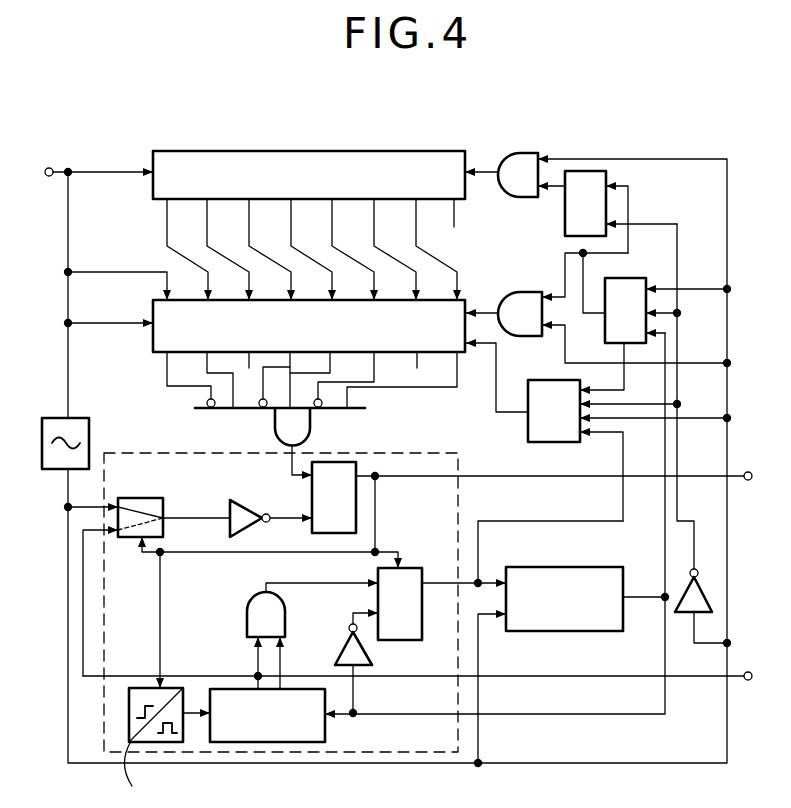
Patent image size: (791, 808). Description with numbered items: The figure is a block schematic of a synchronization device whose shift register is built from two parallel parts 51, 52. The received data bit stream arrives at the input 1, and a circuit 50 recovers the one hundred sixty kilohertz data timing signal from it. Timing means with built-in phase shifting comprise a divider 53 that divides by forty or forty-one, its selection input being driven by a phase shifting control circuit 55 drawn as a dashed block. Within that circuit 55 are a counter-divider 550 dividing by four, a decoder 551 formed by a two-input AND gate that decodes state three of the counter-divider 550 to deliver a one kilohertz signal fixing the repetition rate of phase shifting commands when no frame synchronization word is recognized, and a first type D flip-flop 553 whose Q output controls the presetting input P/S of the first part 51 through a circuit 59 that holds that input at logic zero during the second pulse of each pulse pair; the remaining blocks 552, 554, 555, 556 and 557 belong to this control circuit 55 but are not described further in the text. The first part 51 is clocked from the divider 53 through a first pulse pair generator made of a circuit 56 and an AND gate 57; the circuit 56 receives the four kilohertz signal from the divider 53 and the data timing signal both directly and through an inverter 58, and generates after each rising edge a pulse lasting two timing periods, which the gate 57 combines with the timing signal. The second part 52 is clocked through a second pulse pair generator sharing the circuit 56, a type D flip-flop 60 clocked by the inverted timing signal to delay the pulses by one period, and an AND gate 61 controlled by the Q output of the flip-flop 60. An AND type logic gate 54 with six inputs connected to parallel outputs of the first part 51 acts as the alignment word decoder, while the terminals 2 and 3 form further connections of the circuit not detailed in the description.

The input 1 is at (50, 167).
The output terminal 2 is at (748, 471).
The output terminal 3 is at (748, 671).
The timing recovery circuit 50 is at (80, 428).
The first part of the shift register 51 is at (162, 312).
The second part of the shift register 52 is at (345, 160).
The divider 53 is at (590, 580).
The AND type logic gate 54 is at (308, 430).
The phase shifting control circuit 55 is at (458, 726).
The circuit 56 is at (630, 290).
The AND type logic gate 57 is at (520, 298).
The inverter 58 is at (703, 592).
The circuit 59 is at (528, 424).
The type D flip-flop 60 is at (578, 207).
The AND type logic gate 61 is at (518, 163).
The counter-divider 550 is at (326, 727).
The decoder 551 is at (256, 613).
The inverter 552 is at (352, 653).
The first type D flip-flop 553 is at (405, 576).
The multiplexer 554 is at (130, 497).
The D flip-flop 555 is at (322, 493).
The inverter 556 is at (232, 500).
The detector 557 is at (140, 697).